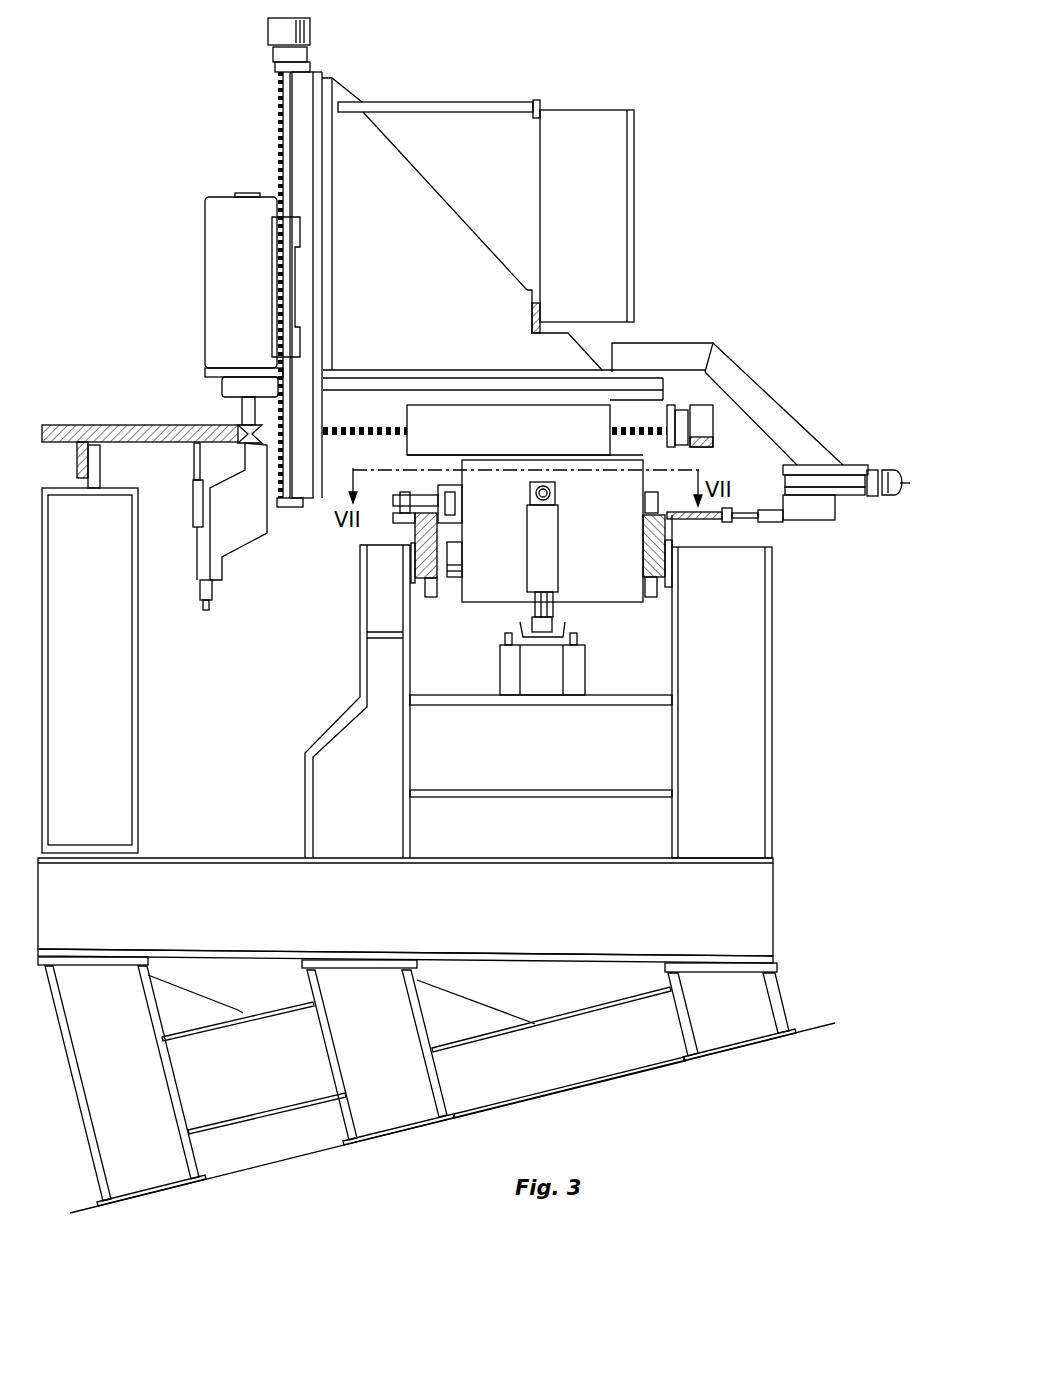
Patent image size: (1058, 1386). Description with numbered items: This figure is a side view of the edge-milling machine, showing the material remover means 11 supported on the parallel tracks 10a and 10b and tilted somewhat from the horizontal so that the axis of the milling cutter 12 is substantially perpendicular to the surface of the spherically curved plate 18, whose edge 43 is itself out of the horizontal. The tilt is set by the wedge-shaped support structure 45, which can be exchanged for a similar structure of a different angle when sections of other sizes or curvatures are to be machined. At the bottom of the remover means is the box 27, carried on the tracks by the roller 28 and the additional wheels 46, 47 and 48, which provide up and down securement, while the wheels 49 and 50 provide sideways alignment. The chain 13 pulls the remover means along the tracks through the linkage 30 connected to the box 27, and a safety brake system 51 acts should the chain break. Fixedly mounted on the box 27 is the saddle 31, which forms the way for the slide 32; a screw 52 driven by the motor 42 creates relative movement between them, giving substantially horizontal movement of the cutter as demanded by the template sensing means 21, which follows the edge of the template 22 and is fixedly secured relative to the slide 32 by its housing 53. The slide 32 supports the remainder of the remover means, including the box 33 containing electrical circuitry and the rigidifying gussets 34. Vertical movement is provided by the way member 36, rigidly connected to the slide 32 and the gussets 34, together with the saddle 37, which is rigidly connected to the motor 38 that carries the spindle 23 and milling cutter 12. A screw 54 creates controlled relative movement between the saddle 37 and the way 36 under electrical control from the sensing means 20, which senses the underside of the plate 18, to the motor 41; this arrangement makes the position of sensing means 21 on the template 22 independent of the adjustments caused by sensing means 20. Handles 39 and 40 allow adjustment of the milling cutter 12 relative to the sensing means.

The track 10a is at (420, 585).
The track 10b is at (665, 560).
The material remover means 11 is at (570, 100).
The milling cutter 12 is at (240, 428).
The chain 13 is at (565, 628).
The spherically curved plate 18 is at (112, 425).
The sensing means 20 is at (193, 452).
The template sensing means 21 is at (730, 510).
The template 22 is at (742, 517).
The spindle 23 is at (228, 398).
The box 27 is at (552, 531).
The roller 28 is at (652, 500).
The linkage 30 is at (556, 605).
The saddle 31 is at (525, 430).
The slide 32 is at (633, 378).
The box 33 is at (638, 196).
The gusset 34 is at (513, 239).
The way member 36 is at (320, 90).
The saddle 37 is at (272, 262).
The motor 38 is at (205, 302).
The handle 39 is at (215, 598).
The handle 40 is at (908, 493).
The motor 41 is at (311, 30).
The motor 42 is at (714, 430).
The edge 43 is at (247, 448).
The support structure 45 is at (83, 1145).
The wheel 46 is at (652, 598).
The wheel 47 is at (434, 598).
The wheel 48 is at (425, 497).
The wheel 49 is at (400, 520).
The wheel 50 is at (455, 512).
The safety brake system 51 is at (456, 555).
The screw 52 is at (392, 436).
The housing 53 is at (697, 350).
The screw 54 is at (280, 495).